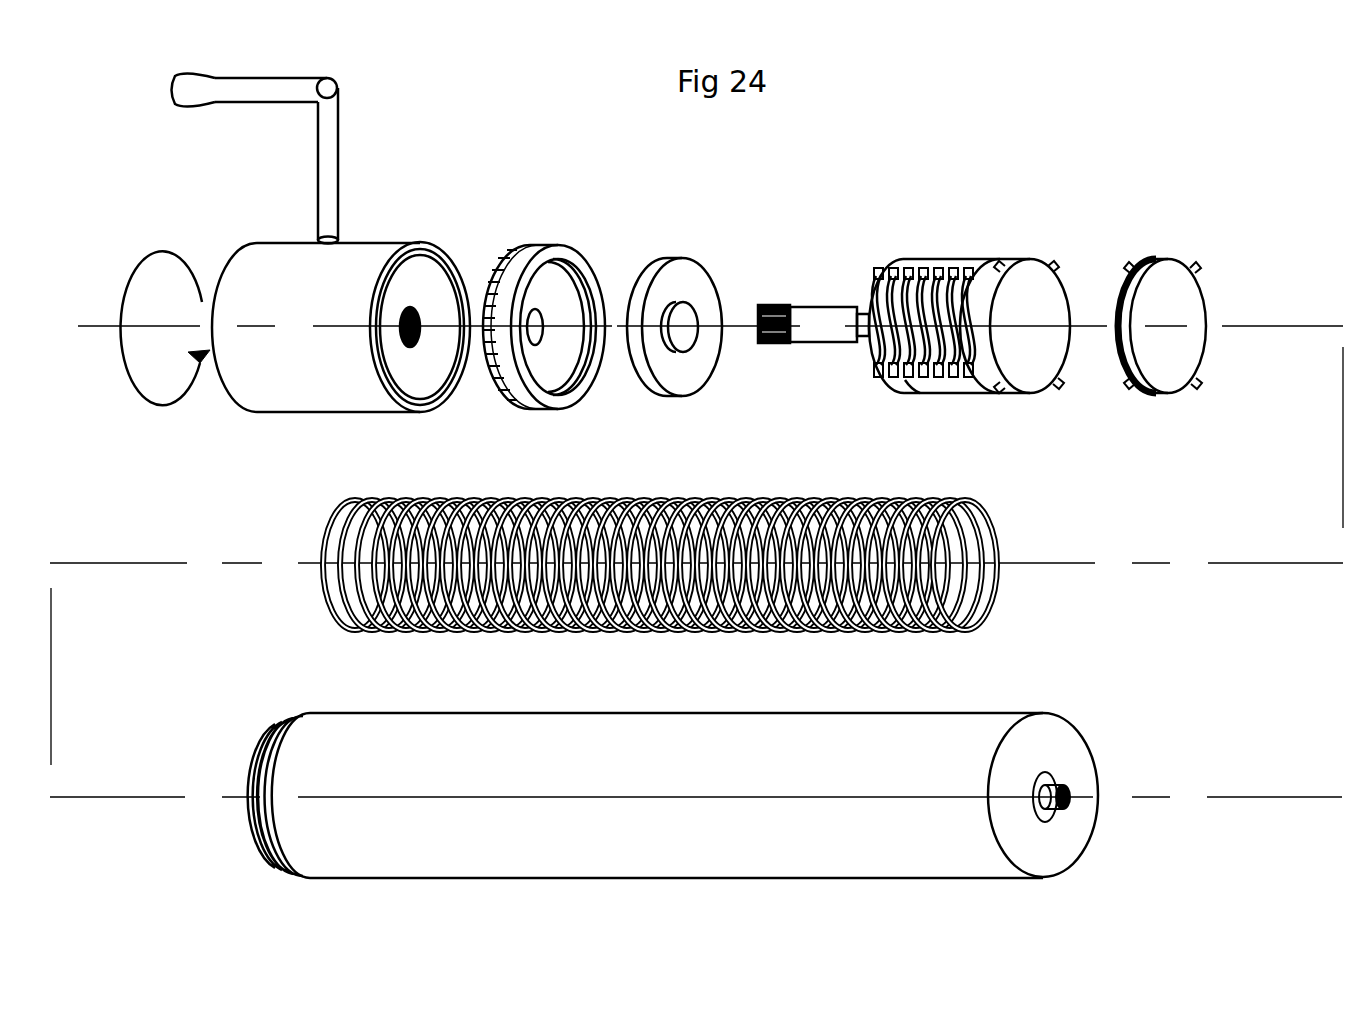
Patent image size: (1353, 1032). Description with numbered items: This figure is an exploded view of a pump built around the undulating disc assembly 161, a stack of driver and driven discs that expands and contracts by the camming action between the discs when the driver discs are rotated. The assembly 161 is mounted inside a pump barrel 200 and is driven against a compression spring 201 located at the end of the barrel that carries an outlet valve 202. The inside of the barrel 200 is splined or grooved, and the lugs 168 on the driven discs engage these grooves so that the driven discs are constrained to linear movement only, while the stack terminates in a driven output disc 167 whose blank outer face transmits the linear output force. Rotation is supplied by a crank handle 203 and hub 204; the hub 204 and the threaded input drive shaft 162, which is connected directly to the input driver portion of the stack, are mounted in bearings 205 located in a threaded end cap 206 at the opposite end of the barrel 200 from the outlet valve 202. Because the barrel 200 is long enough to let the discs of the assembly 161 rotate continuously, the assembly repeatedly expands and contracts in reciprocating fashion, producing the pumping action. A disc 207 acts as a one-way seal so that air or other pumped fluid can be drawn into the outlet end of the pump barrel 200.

The undulating disc assembly 161 is at (967, 257).
The threaded input drive shaft 162 is at (820, 307).
The driven output disc 167 is at (1052, 260).
The lugs 168 is at (915, 393).
The pump barrel 200 is at (958, 712).
The compression spring 201 is at (955, 500).
The outlet valve 202 is at (1063, 787).
The crank handle 203 is at (307, 103).
The hub 204 is at (435, 245).
The bearings 205 is at (688, 260).
The threaded end cap 206 is at (582, 253).
The disc 207 is at (1188, 260).